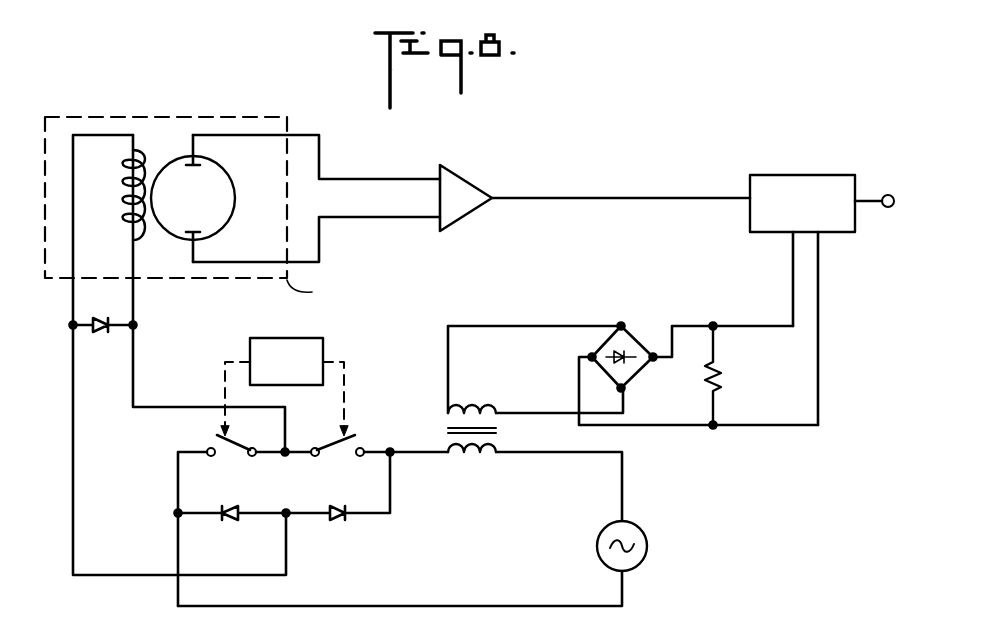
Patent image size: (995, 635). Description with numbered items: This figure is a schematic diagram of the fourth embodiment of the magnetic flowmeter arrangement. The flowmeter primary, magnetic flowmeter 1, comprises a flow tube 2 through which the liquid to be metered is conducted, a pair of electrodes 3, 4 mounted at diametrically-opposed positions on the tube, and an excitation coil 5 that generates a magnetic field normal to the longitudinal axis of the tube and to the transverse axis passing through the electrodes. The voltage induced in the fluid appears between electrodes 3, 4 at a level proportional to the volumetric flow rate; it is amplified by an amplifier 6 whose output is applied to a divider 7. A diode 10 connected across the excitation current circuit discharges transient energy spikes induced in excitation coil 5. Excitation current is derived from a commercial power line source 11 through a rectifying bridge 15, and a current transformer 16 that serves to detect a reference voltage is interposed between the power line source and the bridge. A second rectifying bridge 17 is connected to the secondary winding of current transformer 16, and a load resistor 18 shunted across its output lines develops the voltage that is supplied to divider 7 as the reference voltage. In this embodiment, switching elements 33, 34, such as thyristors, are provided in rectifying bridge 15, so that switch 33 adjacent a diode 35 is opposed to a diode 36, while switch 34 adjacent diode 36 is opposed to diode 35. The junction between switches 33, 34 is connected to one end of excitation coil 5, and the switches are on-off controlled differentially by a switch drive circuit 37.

The magnetic flowmeter 1 is at (266, 115).
The flow tube 2 is at (177, 157).
The electrode 3 is at (194, 173).
The electrode 4 is at (196, 226).
The excitation coil 5 is at (128, 226).
The amplifier 6 is at (490, 186).
The divider 7 is at (814, 176).
The diode 10 is at (99, 339).
The commercial power line source 11 is at (647, 550).
The rectifying bridge 15 is at (312, 520).
The current transformer 16 is at (480, 461).
The rectifying bridge 17 is at (636, 380).
The load resistor 18 is at (728, 378).
The switching element 33 is at (226, 460).
The switching element 34 is at (330, 462).
The diode 35 is at (224, 530).
The diode 36 is at (334, 532).
The switch drive circuit 37 is at (324, 343).